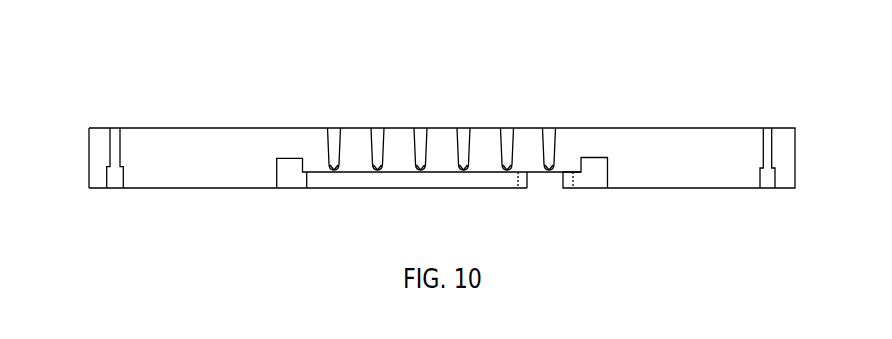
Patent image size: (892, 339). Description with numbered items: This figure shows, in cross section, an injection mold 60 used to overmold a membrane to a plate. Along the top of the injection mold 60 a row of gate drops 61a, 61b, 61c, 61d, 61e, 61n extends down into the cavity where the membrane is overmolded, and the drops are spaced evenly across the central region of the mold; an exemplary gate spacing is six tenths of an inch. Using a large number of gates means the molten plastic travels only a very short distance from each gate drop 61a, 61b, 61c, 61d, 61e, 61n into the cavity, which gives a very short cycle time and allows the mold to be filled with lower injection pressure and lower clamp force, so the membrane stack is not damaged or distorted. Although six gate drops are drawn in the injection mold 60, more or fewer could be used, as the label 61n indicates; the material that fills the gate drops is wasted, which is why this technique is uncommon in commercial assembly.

The injection mold 60 is at (131, 58).
The gate drop 61a is at (335, 129).
The gate drop 61b is at (378, 129).
The gate drop 61c is at (421, 129).
The gate drop 61d is at (464, 129).
The gate drop 61e is at (507, 129).
The gate drop 61n is at (550, 129).